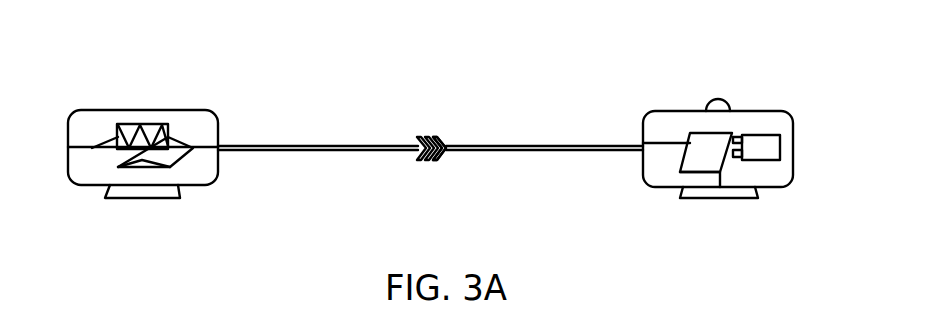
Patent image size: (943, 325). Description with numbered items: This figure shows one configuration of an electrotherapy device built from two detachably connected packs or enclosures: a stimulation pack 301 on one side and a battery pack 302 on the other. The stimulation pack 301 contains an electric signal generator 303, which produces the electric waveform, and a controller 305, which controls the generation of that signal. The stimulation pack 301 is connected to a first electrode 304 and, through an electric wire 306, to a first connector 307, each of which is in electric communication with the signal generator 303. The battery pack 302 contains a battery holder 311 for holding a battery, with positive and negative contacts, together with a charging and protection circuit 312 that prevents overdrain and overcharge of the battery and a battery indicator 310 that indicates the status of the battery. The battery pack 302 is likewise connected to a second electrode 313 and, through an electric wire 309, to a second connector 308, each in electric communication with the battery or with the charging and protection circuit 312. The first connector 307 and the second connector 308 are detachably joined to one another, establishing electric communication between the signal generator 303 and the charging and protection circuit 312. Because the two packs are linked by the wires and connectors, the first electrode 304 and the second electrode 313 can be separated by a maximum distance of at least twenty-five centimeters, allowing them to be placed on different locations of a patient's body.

The stimulation pack 301 is at (198, 120).
The battery pack 302 is at (665, 127).
The electric signal generator 303 is at (123, 125).
The first electrode 304 is at (120, 192).
The controller 305 is at (142, 163).
The electric wire 306 is at (325, 152).
The first connector 307 is at (420, 160).
The second connector 308 is at (437, 132).
The electric wire 309 is at (485, 140).
The battery indicator 310 is at (715, 100).
The battery holder 311 is at (760, 138).
The charging and protection circuit 312 is at (693, 148).
The second electrode 313 is at (692, 195).